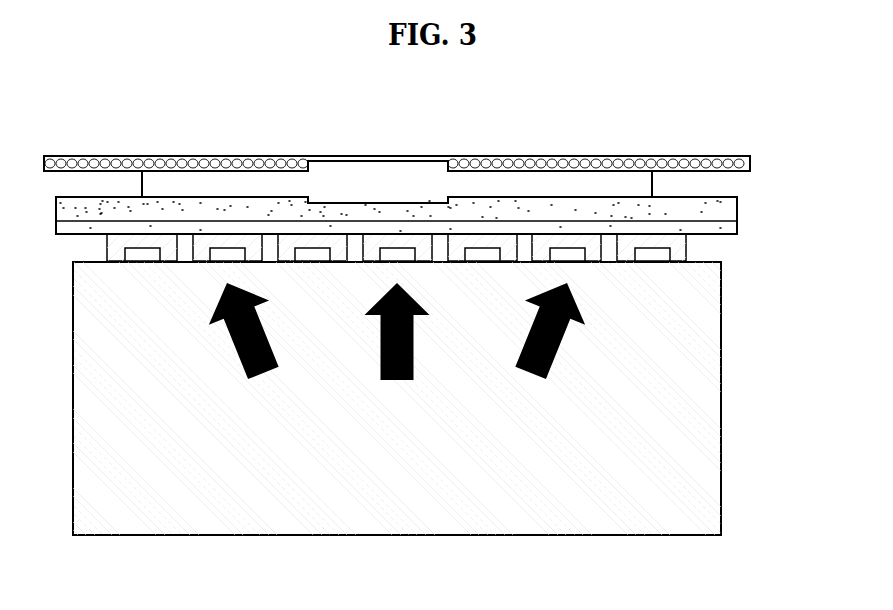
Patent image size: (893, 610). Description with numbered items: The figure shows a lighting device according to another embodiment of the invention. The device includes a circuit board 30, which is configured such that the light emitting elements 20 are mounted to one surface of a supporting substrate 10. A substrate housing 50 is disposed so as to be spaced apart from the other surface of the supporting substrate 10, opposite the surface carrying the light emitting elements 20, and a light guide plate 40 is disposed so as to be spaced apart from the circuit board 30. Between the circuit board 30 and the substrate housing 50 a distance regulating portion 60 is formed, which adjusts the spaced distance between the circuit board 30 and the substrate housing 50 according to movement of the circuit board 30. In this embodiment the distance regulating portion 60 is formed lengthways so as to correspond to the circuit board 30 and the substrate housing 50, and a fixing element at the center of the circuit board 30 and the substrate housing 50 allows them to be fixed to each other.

The supporting substrate 10 is at (732, 208).
The light emitting elements 20 is at (670, 248).
The circuit board 30 is at (823, 220).
The light guide plate 40 is at (716, 334).
The substrate housing 50 is at (750, 160).
The distance regulating portion 60 is at (652, 183).